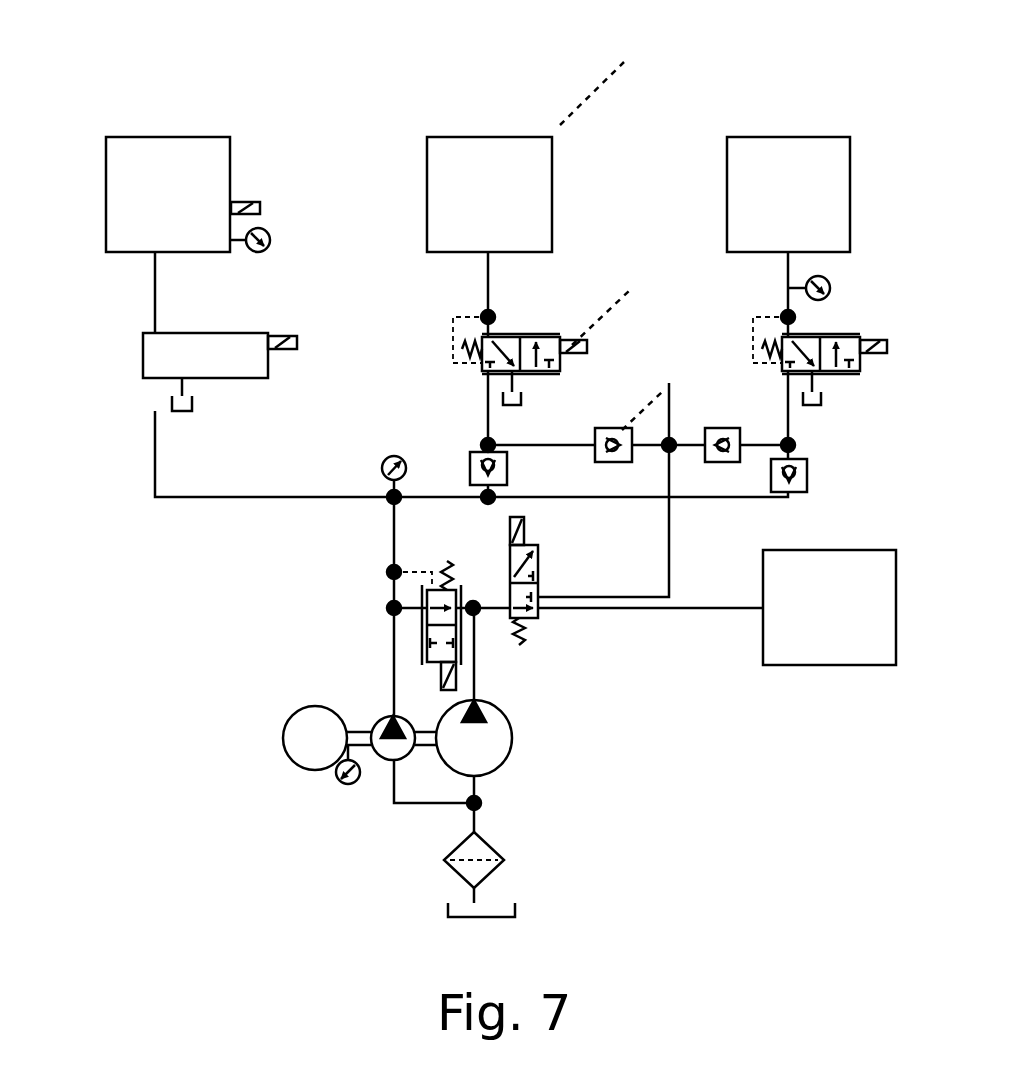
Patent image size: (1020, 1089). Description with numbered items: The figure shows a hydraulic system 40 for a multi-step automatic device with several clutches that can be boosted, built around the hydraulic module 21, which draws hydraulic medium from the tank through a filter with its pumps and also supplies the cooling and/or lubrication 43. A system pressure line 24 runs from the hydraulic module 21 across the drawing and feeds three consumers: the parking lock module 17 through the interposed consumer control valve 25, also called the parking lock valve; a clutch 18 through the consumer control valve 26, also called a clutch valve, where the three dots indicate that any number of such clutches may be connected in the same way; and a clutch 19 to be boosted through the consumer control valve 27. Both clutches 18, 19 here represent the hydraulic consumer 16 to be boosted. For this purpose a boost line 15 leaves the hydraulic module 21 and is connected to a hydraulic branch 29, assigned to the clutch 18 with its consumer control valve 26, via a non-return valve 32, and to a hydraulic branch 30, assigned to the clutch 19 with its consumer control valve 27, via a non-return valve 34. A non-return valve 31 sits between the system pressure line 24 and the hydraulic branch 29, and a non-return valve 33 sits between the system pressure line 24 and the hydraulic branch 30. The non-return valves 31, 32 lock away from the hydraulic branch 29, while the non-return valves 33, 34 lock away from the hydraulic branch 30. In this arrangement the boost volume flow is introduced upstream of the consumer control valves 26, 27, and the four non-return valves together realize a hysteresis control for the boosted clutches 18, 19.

The hydraulic system 40 is at (107, 103).
The hydraulic consumer to be boosted 16 is at (848, 120).
The parking lock module 17 is at (180, 209).
The clutch 18 is at (503, 209).
The clutch to be boosted 19 is at (803, 209).
The consumer control valve 25 is at (143, 350).
The consumer control valve 26 is at (482, 365).
The consumer control valve 27 is at (850, 375).
The hydraulic branch 29 is at (496, 443).
The hydraulic branch 30 is at (796, 445).
The non-return valve 31 is at (470, 466).
The non-return valve 32 is at (607, 428).
The non-return valve 33 is at (810, 478).
The non-return valve 34 is at (730, 428).
The system pressure line 24 is at (244, 498).
The boost line 15 is at (672, 527).
The cooling and/or lubrication 43 is at (843, 619).
The hydraulic module 21 is at (228, 738).